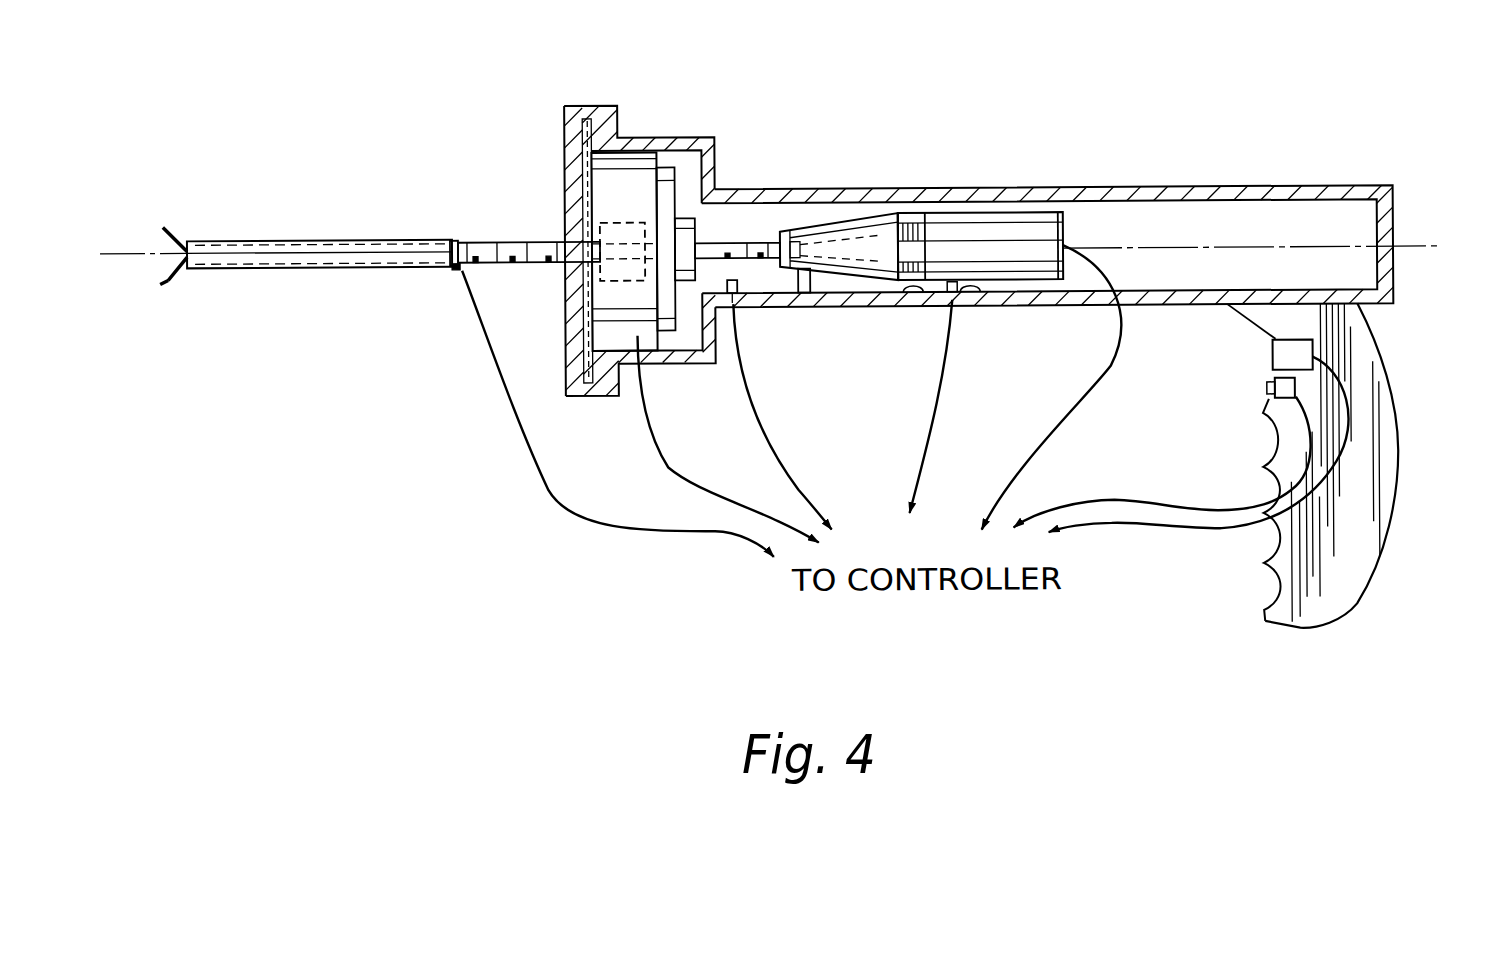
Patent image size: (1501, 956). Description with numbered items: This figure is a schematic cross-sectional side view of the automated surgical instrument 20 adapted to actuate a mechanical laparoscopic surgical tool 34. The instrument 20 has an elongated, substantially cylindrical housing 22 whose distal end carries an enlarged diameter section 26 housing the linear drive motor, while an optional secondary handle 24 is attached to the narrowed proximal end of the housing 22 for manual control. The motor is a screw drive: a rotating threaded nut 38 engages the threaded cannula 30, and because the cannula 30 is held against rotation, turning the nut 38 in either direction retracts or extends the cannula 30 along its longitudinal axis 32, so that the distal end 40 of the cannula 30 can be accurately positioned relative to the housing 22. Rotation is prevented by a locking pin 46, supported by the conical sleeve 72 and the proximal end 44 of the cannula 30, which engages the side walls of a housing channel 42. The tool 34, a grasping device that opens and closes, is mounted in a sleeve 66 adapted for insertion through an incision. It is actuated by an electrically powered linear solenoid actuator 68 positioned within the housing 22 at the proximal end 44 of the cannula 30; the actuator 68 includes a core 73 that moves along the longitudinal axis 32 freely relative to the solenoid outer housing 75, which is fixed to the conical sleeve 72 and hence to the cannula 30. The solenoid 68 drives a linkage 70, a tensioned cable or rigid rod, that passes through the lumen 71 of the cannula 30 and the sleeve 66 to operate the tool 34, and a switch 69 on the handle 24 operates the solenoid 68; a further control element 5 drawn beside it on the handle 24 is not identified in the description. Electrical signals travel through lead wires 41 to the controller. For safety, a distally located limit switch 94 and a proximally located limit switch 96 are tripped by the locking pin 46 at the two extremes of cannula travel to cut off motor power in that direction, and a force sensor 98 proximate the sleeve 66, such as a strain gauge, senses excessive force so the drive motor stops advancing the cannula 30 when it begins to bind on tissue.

The automated surgical instrument 20 is at (1112, 127).
The housing 22 is at (1207, 192).
The secondary handle 24 is at (1393, 501).
The enlarged diameter section 26 is at (680, 132).
The cannula 30 is at (487, 238).
The longitudinal axis 32 is at (150, 249).
The laparoscopic surgical tool 34 is at (169, 277).
The threaded nut 38 is at (620, 222).
The distal end of the cannula 40 is at (461, 240).
The lead wires 41 is at (541, 471).
The housing channel 42 is at (925, 306).
The proximal end of the cannula 44 is at (759, 245).
The locking pin 46 is at (847, 308).
The trigger switch 5 is at (1268, 355).
The sleeve 66 is at (322, 266).
The linear solenoid actuator 68 is at (1062, 245).
The switch 69 is at (1267, 390).
The linkage 70 is at (857, 238).
The lumen 71 is at (533, 241).
The conical sleeve 72 is at (860, 223).
The core 73 is at (893, 216).
The solenoid outer housing 75 is at (1024, 214).
The distal limit switch 94 is at (738, 284).
The proximal limit switch 96 is at (982, 307).
The force sensor 98 is at (457, 266).